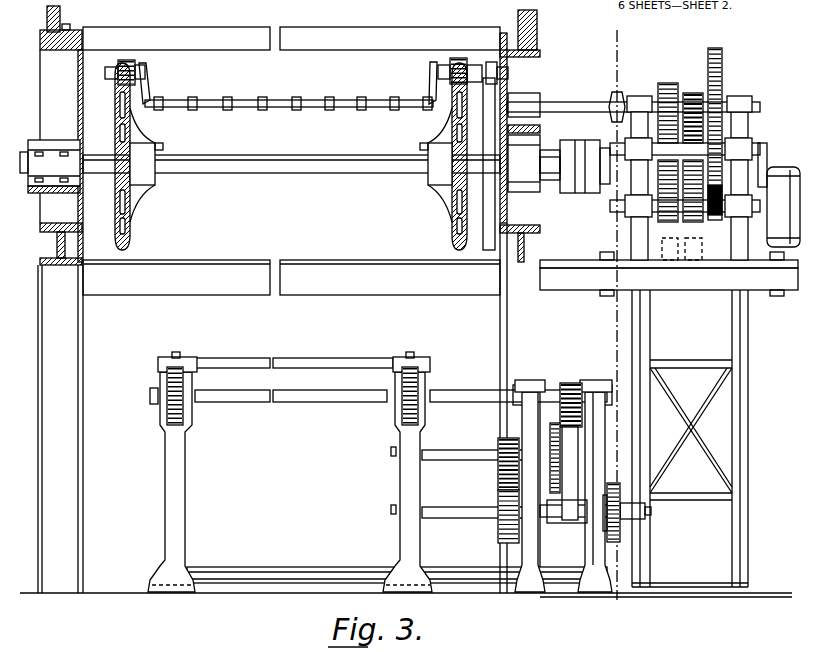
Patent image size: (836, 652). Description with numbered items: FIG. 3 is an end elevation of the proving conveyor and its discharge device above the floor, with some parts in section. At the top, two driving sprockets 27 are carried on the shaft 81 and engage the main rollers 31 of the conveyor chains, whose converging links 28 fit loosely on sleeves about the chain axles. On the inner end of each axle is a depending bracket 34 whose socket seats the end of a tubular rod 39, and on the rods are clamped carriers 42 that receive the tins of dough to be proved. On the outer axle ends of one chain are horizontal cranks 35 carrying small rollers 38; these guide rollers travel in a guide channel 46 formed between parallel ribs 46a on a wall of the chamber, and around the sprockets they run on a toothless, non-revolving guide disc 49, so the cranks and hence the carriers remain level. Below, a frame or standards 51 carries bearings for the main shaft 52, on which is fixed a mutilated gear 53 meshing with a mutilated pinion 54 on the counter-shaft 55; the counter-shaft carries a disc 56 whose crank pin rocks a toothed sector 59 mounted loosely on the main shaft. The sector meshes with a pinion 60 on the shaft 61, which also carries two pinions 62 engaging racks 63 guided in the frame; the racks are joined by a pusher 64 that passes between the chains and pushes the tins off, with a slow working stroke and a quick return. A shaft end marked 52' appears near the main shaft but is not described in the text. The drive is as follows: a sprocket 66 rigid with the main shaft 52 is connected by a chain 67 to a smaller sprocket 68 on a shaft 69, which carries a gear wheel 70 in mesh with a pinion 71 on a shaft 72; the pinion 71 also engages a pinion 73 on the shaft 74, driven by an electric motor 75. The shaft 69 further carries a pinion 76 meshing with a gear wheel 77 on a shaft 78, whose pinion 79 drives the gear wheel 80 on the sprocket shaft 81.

The driving sprocket 27 is at (131, 210).
The link 28 is at (141, 67).
The roller 31 is at (126, 60).
The bracket 34 is at (150, 95).
The crank 35 is at (100, 60).
The small roller 38 is at (540, 70).
The tubular rod 39 is at (213, 107).
The carrier 42 is at (294, 106).
The guide channel 46 is at (540, 68).
The parallel rib 46a is at (540, 60).
The guide disc 49 is at (489, 251).
The frame 51 is at (186, 490).
The main shaft 52 is at (554, 524).
The shaft extension 52' is at (662, 496).
The gear 53 is at (498, 528).
The pinion 54 is at (500, 441).
The counter-shaft 55 is at (437, 461).
The disc 56 is at (553, 423).
The toothed sector 59 is at (578, 443).
The pinion 60 is at (575, 385).
The shaft 61 is at (238, 403).
The pinion 62 is at (162, 382).
The rack 63 is at (181, 358).
The pusher 64 is at (290, 360).
The sprocket 66 is at (622, 537).
The chain 67 is at (617, 325).
The sprocket 68 is at (620, 92).
The shaft 69 is at (753, 100).
The gear wheel 70 is at (722, 57).
The pinion 71 is at (722, 130).
The shaft 72 is at (655, 147).
The pinion 73 is at (743, 238).
The shaft 74 is at (640, 198).
The electric motor 75 is at (783, 200).
The pinion 76 is at (692, 93).
The gear wheel 77 is at (694, 249).
The shaft 78 is at (764, 158).
The pinion 79 is at (655, 207).
The gear wheel 80 is at (670, 83).
The shaft 81 is at (321, 174).